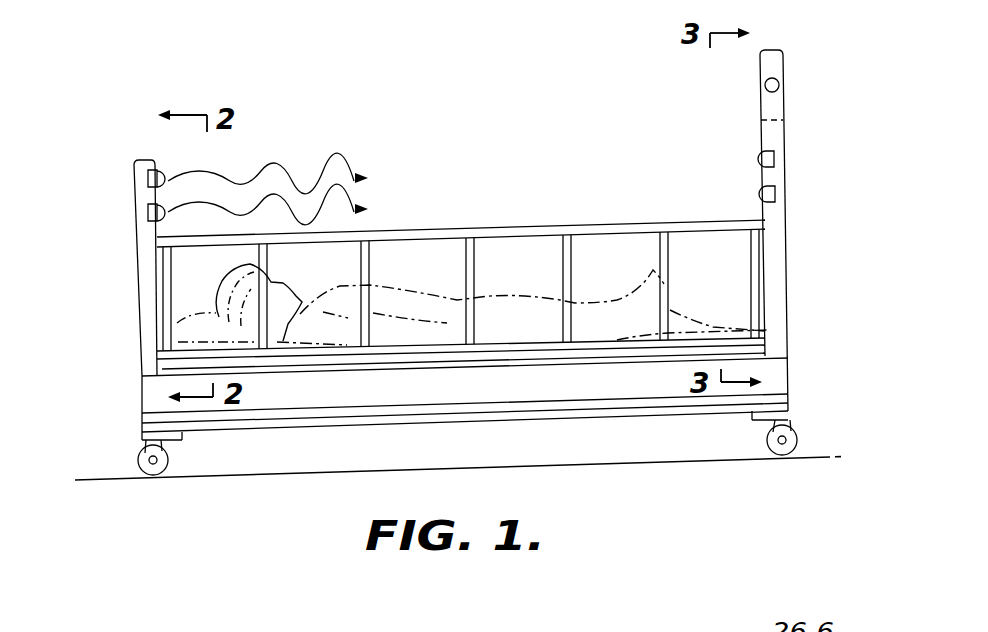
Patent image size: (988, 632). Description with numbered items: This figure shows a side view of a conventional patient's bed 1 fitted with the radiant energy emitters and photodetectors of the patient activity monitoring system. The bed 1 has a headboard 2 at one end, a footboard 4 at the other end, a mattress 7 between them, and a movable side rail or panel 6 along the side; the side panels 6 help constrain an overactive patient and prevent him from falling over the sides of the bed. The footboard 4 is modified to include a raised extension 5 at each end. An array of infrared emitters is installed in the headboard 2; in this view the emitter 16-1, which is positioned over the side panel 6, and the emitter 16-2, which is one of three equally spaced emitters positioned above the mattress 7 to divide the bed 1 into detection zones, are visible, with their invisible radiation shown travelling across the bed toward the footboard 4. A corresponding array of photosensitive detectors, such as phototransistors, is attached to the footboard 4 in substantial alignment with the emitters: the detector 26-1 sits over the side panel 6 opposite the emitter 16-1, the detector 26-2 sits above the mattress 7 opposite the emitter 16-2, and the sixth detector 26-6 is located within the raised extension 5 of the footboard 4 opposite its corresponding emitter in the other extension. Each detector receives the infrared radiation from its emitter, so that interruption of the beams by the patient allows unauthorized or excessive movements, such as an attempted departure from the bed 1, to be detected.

The patient's bed 1 is at (497, 160).
The headboard 2 is at (136, 302).
The footboard 4 is at (789, 290).
The raised extension 5 is at (776, 56).
The side rail 6 is at (605, 221).
The mattress 7 is at (526, 366).
The infrared emitter 16-1 is at (148, 212).
The infrared emitter 16-2 is at (148, 178).
The photodetector 26-1 is at (774, 194).
The photodetector 26-2 is at (773, 159).
The photodetector 26-6 is at (780, 85).